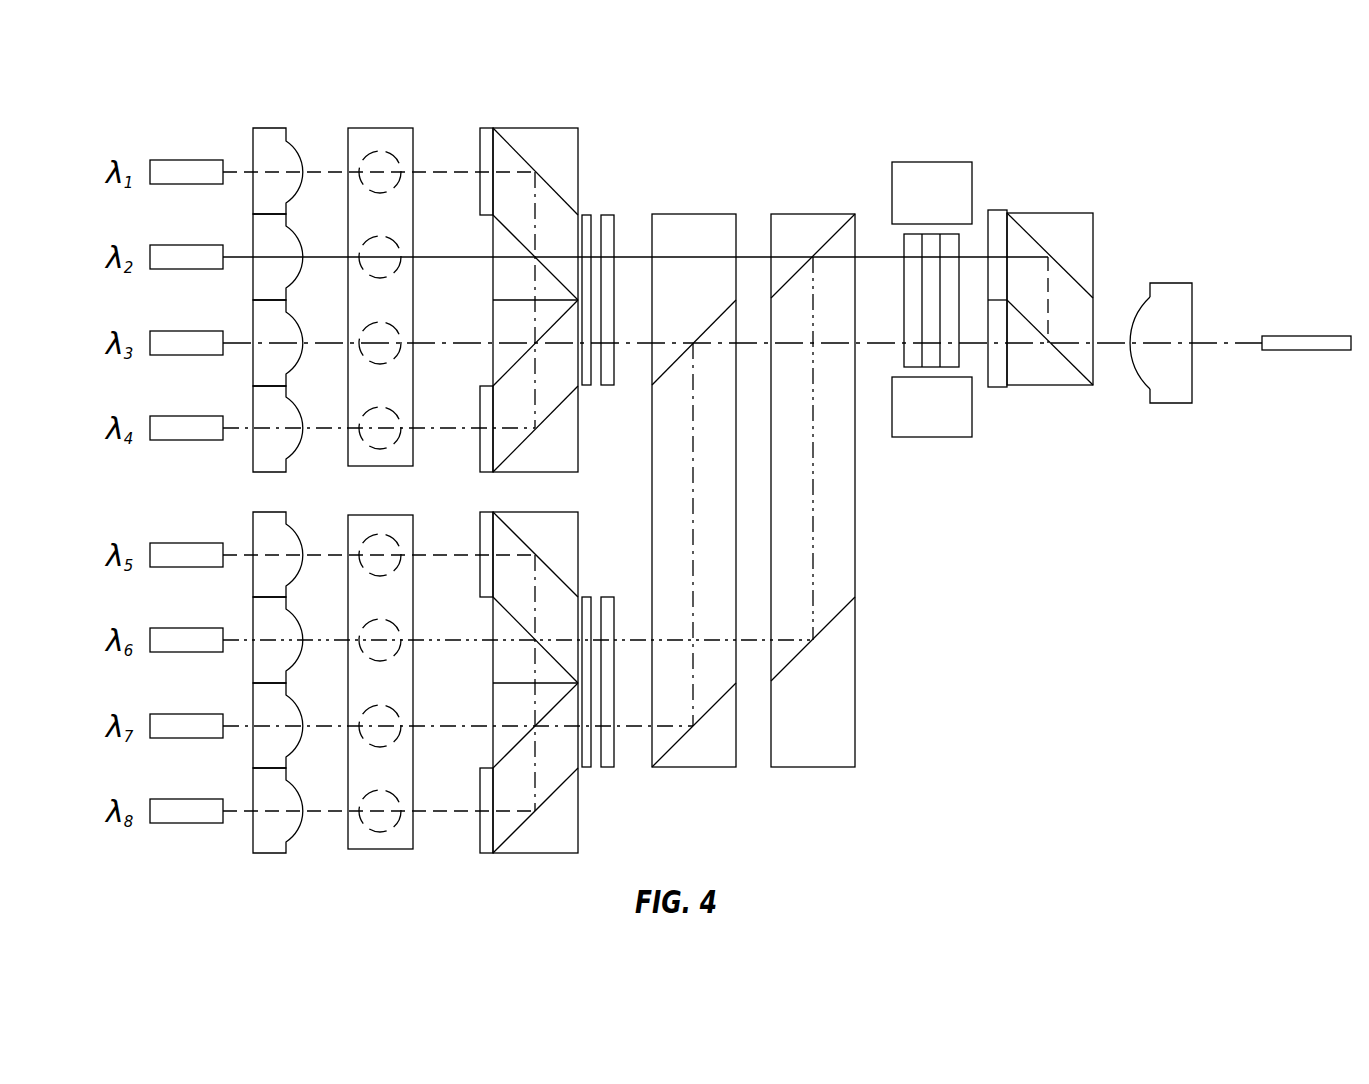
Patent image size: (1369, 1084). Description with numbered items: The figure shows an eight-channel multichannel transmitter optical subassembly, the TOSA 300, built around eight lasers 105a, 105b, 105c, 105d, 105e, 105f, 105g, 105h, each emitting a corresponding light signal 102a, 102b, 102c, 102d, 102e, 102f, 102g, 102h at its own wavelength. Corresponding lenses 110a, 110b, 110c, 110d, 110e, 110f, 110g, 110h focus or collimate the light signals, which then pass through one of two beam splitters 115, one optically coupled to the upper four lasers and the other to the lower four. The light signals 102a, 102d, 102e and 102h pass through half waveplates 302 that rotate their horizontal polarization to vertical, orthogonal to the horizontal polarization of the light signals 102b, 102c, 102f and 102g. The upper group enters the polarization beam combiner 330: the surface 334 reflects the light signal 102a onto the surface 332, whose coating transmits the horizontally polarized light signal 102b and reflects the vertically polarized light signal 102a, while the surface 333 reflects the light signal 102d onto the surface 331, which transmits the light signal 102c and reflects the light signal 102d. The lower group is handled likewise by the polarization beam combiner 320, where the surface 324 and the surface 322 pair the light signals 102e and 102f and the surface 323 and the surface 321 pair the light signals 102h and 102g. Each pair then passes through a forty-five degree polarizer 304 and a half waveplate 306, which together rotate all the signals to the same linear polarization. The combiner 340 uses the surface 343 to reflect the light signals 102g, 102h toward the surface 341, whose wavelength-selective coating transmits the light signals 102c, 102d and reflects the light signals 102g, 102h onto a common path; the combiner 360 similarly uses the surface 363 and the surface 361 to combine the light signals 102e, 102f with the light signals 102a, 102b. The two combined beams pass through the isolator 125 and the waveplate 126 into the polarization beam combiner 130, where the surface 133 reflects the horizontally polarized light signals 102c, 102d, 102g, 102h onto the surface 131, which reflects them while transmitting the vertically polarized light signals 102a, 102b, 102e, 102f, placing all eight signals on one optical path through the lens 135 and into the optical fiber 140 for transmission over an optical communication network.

The laser 105a is at (170, 173).
The laser 105b is at (170, 258).
The laser 105c is at (170, 344).
The laser 105d is at (170, 429).
The laser 105e is at (170, 556).
The laser 105f is at (170, 641).
The laser 105g is at (170, 727).
The laser 105h is at (170, 812).
The lens 110a is at (263, 163).
The lens 110b is at (263, 248).
The lens 110c is at (263, 334).
The lens 110d is at (263, 419).
The lens 110e is at (263, 546).
The lens 110f is at (263, 631).
The lens 110g is at (263, 717).
The lens 110h is at (263, 802).
The light signal 102a is at (263, 178).
The light signal 102b is at (263, 263).
The light signal 102c is at (263, 349).
The light signal 102d is at (263, 434).
The light signal 102e is at (263, 561).
The light signal 102f is at (263, 646).
The light signal 102g is at (263, 732).
The light signal 102h is at (263, 817).
The beam splitter 115 is at (362, 143).
The waveplate 302 is at (485, 395).
The second polarization beam combiner 330 is at (485, 145).
The surface 334 is at (531, 162).
The surface 332 is at (498, 224).
The surface 331 is at (542, 340).
The surface 333 is at (530, 435).
The first polarization beam combiner 320 is at (503, 848).
The surface 324 is at (532, 548).
The surface 322 is at (540, 645).
The surface 321 is at (548, 717).
The surface 323 is at (530, 820).
The polarizer 304 is at (584, 218).
The waveplate 306 is at (606, 215).
The combiner 340 is at (728, 747).
The surface 341 is at (735, 312).
The surface 343 is at (712, 710).
The combiner 360 is at (853, 747).
The surface 361 is at (840, 226).
The surface 363 is at (838, 618).
The isolator 125 is at (970, 405).
The waveplate 126 is at (996, 220).
The polarization beam combiner 130 is at (1050, 378).
The surface 133 is at (1030, 233).
The surface 131 is at (1078, 367).
The lens 135 is at (1178, 380).
The optical fiber 140 is at (1285, 346).
The multichannel TOSA 300 is at (1224, 141).